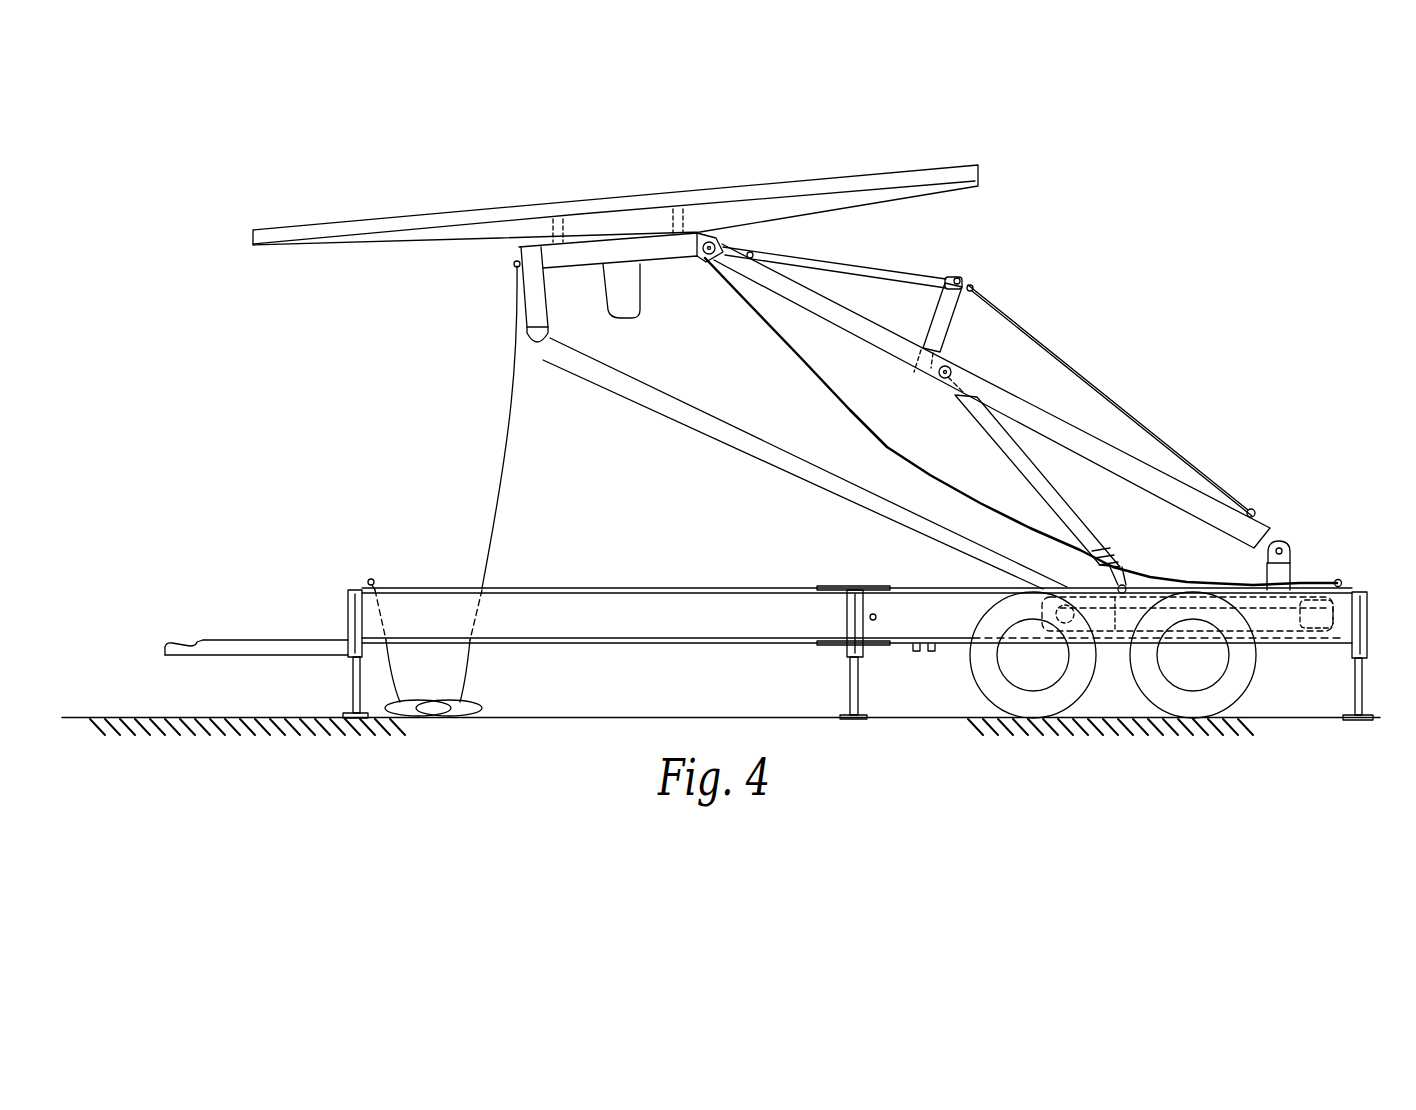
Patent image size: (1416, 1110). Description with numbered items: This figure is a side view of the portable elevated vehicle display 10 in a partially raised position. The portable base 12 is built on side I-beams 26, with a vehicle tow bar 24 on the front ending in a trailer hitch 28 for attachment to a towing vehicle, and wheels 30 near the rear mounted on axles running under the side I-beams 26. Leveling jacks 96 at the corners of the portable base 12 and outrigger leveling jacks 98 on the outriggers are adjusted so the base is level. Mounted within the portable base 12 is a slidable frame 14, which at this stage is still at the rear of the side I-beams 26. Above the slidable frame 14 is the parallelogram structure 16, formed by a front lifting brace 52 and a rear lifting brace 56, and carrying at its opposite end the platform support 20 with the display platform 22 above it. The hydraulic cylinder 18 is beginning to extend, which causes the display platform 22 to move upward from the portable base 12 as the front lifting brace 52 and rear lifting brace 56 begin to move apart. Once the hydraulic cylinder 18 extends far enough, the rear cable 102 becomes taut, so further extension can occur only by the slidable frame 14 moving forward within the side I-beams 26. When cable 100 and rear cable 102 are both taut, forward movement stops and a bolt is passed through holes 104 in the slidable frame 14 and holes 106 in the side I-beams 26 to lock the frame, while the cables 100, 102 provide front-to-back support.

The portable elevated vehicle display 10 is at (1125, 258).
The portable base 12 is at (920, 586).
The slidable frame 14 is at (1193, 580).
The parallelogram structure 16 is at (697, 442).
The hydraulic cylinder 18 is at (1082, 528).
The platform support 20 is at (662, 258).
The display platform 22 is at (495, 212).
The vehicle tow bar 24 is at (297, 640).
The side I-beams 26 is at (780, 628).
The trailer hitch 28 is at (170, 641).
The wheels 30 is at (1153, 690).
The front lifting brace 52 is at (762, 455).
The rear lifting brace 56 is at (888, 342).
The leveling jacks 96 is at (350, 605).
The outrigger leveling jacks 98 is at (848, 667).
The cable 100 is at (503, 450).
The rear cable 102 is at (918, 470).
The holes in slidable frame 104 is at (1187, 640).
The holes in side I-beams 106 is at (876, 619).